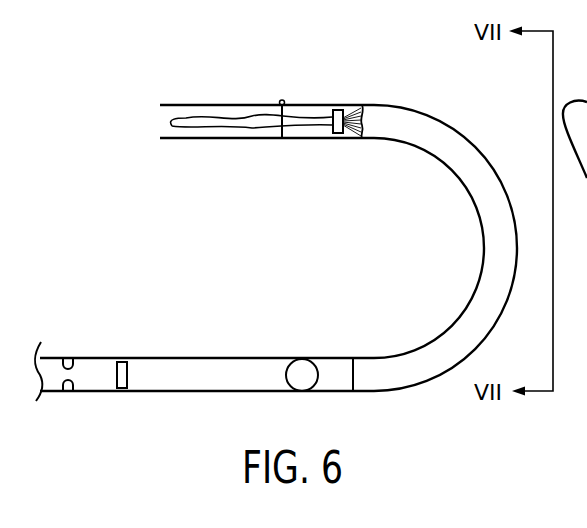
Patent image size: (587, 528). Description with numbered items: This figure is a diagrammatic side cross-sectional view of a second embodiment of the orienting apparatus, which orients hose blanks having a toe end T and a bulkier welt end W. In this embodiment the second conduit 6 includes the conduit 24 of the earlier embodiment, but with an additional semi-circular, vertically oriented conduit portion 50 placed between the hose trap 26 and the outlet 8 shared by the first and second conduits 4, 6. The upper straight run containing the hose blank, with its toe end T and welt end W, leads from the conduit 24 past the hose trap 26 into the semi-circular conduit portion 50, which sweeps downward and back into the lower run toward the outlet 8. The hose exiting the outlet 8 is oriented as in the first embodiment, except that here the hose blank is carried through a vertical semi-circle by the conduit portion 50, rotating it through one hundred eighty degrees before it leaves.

The first conduit 4 is at (246, 393).
The second conduit 6 is at (285, 360).
The outlet 8 is at (350, 372).
The conduit 24 is at (238, 105).
The hose trap 26 is at (336, 110).
The conduit portion 50 is at (462, 135).
The toe end T is at (172, 116).
The welt end W is at (362, 105).